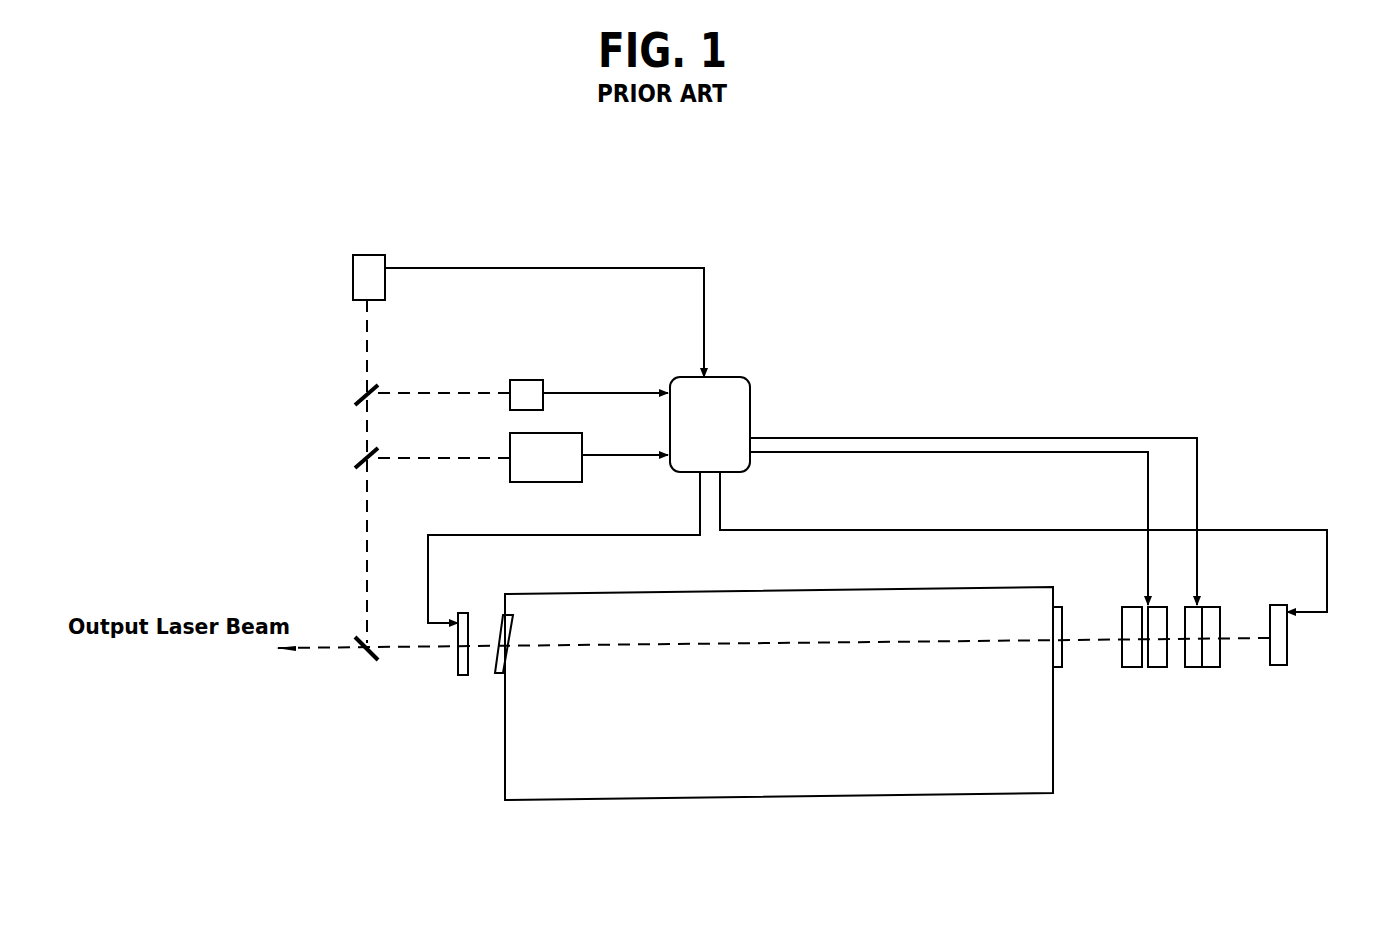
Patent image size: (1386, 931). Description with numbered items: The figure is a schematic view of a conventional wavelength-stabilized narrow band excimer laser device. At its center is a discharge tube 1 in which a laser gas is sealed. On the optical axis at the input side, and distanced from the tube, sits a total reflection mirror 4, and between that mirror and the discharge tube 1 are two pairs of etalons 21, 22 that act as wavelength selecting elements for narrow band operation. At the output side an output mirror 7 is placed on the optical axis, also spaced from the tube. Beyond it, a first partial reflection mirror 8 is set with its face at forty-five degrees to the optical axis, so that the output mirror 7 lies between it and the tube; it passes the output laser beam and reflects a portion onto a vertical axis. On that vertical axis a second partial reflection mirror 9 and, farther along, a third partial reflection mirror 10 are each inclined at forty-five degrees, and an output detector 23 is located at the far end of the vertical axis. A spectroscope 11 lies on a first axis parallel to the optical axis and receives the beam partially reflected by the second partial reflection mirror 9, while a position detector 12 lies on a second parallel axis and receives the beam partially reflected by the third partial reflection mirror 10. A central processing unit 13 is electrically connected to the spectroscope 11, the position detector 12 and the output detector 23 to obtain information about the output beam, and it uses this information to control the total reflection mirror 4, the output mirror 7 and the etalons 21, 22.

The discharge tube 1 is at (875, 765).
The total reflection mirror 4 is at (1290, 652).
The output mirror 7 is at (456, 652).
The first partial reflection mirror 8 is at (361, 651).
The second partial reflection mirror 9 is at (357, 456).
The third partial reflection mirror 10 is at (356, 394).
The spectroscope 11 is at (567, 452).
The position detector 12 is at (533, 390).
The central processing unit 13 is at (733, 395).
The etalon 21 is at (1158, 678).
The etalon 22 is at (1211, 678).
The output detector 23 is at (373, 262).